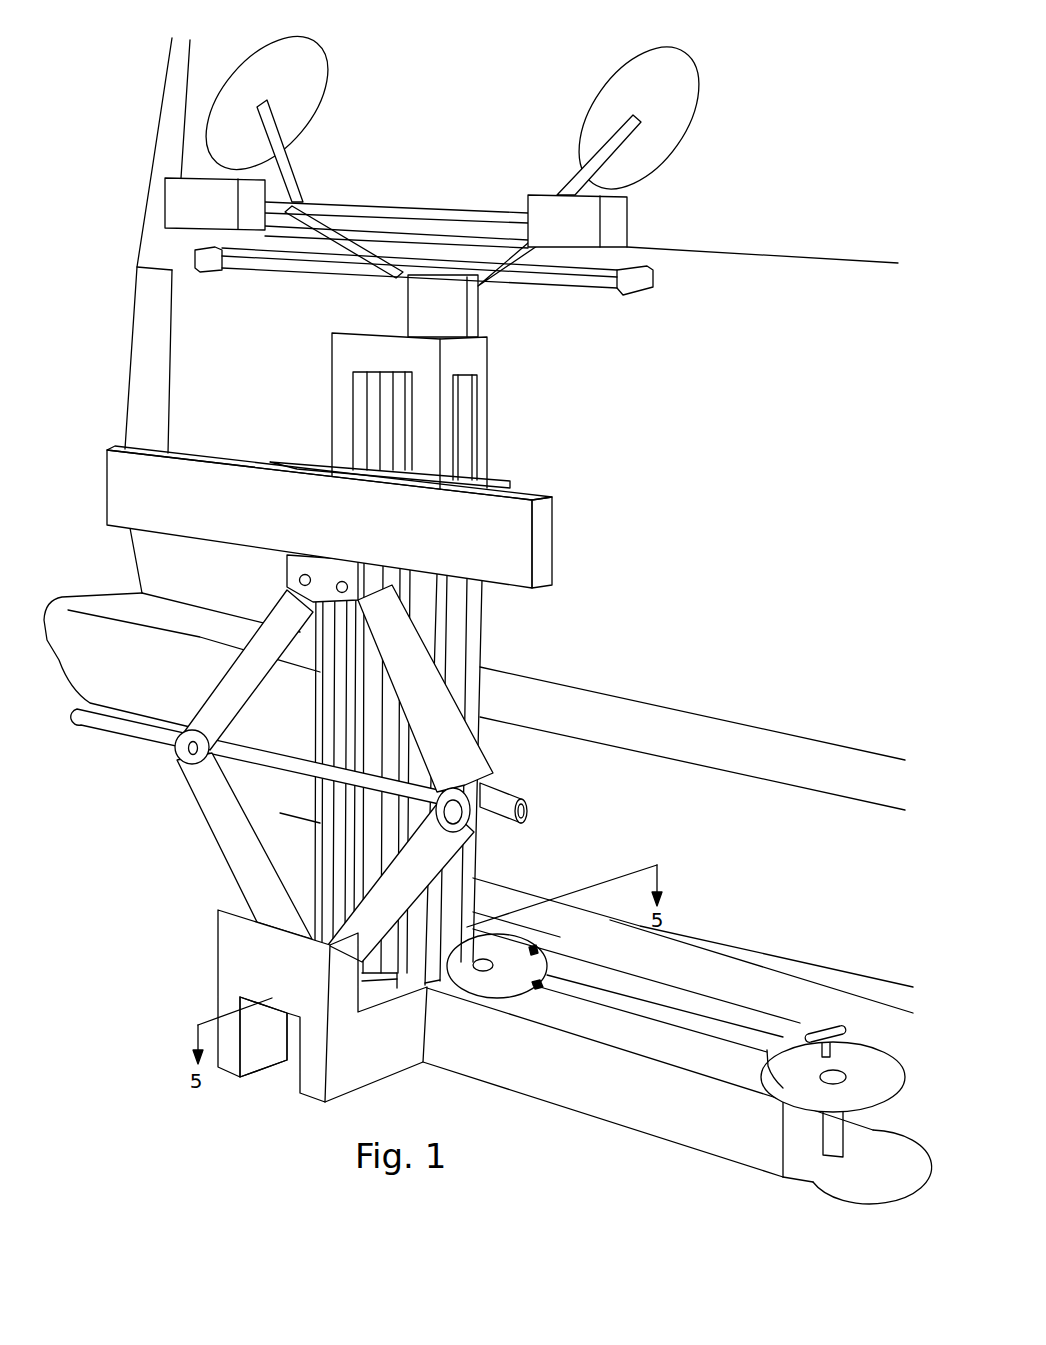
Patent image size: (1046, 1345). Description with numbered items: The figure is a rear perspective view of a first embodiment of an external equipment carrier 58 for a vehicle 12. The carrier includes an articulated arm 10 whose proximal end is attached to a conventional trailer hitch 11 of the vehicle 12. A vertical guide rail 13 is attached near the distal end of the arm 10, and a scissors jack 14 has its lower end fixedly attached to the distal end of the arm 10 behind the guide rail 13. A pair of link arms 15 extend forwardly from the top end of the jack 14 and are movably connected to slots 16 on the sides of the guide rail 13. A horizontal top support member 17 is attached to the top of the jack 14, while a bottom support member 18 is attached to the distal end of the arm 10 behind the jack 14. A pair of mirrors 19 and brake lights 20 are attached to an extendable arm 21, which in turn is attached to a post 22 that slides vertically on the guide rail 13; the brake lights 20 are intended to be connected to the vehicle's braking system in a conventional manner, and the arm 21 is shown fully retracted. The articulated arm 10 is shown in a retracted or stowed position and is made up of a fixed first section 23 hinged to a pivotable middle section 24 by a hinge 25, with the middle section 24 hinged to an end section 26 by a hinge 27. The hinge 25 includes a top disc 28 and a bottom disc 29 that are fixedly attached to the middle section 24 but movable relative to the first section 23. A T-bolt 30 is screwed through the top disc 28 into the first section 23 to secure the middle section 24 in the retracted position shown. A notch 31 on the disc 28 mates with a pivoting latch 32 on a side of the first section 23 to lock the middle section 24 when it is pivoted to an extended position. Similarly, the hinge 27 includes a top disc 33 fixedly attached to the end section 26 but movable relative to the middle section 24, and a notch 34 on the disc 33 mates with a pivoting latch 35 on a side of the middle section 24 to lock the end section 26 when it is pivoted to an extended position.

The articulated arm 10 is at (572, 1112).
The trailer hitch 11 is at (532, 900).
The vehicle 12 is at (692, 529).
The vertical guide rail 13 is at (482, 632).
The scissors jack 14 is at (222, 843).
The link arms 15 is at (302, 457).
The slots 16 is at (382, 393).
The horizontal top support member 17 is at (548, 545).
The bottom support member 18 is at (223, 947).
The mirrors 19 is at (692, 82).
The brake lights 20 is at (622, 221).
The extendable arm 21 is at (580, 281).
The post 22 is at (479, 302).
The fixed first section 23 is at (725, 1015).
The middle section 24 is at (520, 1088).
The hinge 25 is at (833, 1155).
The end section 26 is at (291, 1058).
The hinge 27 is at (485, 970).
The top disc 28 is at (887, 1065).
The bottom disc 29 is at (880, 1177).
The T-bolt 30 is at (830, 1033).
The notch 31 is at (880, 1100).
The pivoting latch 32 is at (772, 1050).
The top disc 33 is at (455, 988).
The notch 34 is at (532, 950).
The pivoting latch 35 is at (540, 986).
The external equipment carrier 58 is at (508, 767).